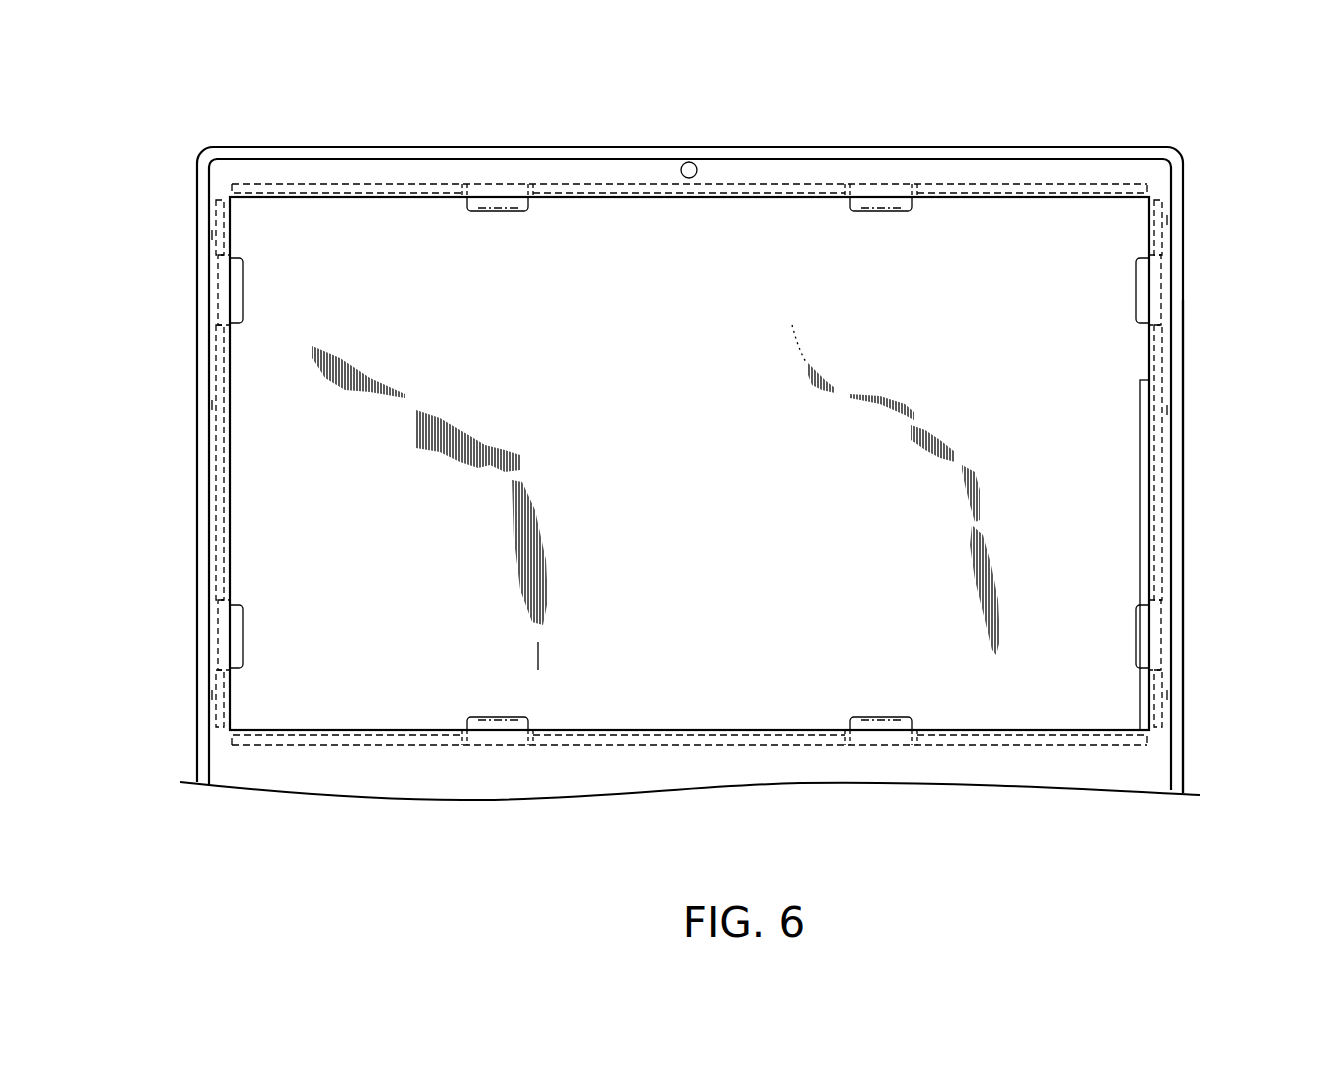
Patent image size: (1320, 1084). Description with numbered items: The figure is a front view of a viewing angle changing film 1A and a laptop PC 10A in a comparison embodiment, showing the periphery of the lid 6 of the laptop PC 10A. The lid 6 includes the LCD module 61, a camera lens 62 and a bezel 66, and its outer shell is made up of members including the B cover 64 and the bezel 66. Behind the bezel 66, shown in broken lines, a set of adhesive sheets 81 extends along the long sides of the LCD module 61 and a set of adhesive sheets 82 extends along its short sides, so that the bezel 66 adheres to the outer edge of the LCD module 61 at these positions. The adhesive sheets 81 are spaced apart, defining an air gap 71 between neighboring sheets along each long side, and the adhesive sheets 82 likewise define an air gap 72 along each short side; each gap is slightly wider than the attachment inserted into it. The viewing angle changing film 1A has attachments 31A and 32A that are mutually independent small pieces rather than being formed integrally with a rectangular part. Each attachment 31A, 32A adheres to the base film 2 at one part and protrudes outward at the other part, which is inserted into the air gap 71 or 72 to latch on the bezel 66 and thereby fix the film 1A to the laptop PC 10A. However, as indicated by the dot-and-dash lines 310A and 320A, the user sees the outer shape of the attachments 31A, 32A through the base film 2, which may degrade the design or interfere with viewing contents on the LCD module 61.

The laptop PC 10A is at (210, 128).
The lid 6 is at (1170, 135).
The B cover 64 is at (1178, 172).
The bezel 66 is at (1063, 167).
The camera lens 62 is at (695, 163).
The LCD module 61 is at (280, 508).
The base film 2 is at (1130, 523).
The viewing angle changing film 1A is at (1125, 452).
The adhesive sheets 81 is at (305, 184).
The air gap 71 is at (463, 186).
The attachment 31A is at (505, 188).
The dot-and-dash line 310A is at (485, 212).
The dot-and-dash line 320A is at (243, 310).
The attachment 32A is at (220, 290).
The air gap 72 is at (216, 260).
The adhesive sheets 82 is at (213, 236).